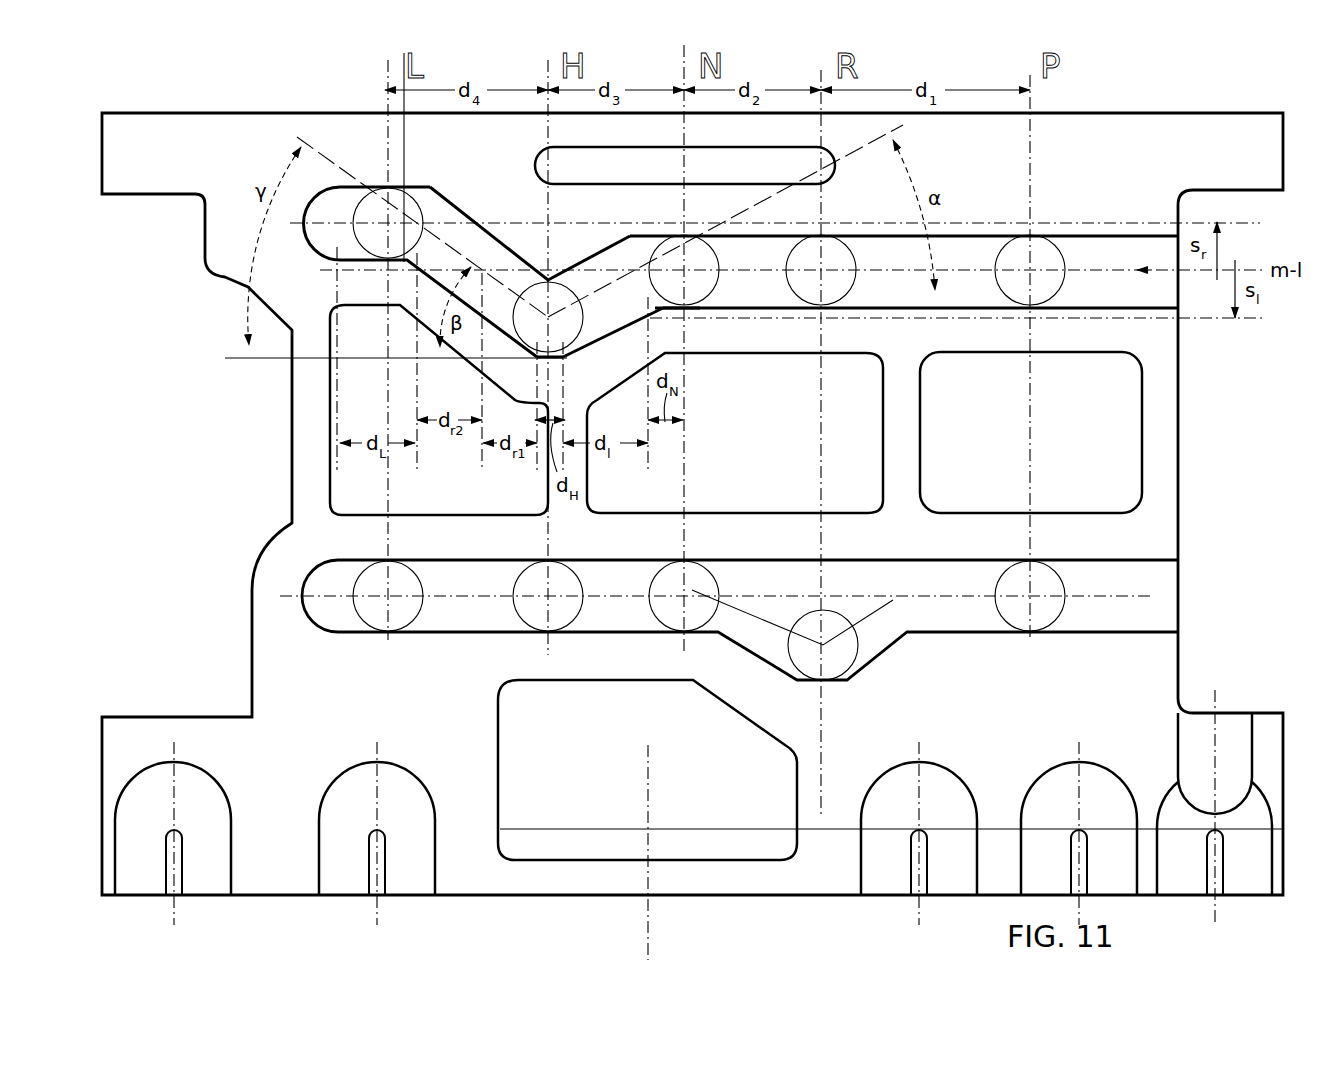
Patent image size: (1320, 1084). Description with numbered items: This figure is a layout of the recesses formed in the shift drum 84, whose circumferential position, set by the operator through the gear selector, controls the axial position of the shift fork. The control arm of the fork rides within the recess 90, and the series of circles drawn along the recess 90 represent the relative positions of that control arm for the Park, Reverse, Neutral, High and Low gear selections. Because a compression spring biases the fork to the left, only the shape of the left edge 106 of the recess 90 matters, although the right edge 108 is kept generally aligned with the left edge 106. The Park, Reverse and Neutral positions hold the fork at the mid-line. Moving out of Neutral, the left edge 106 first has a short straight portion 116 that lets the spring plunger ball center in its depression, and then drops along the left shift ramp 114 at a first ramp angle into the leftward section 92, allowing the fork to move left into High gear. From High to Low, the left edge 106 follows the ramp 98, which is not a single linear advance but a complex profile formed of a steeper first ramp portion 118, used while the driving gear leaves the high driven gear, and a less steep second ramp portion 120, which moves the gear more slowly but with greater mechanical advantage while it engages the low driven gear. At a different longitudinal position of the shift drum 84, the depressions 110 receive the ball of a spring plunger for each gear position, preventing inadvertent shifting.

The shift drum 84 is at (1082, 137).
The recess 90 is at (960, 250).
The leftward section 92 is at (583, 287).
The ramp 98 is at (423, 294).
The left edge 106 is at (947, 308).
The right edge 108 is at (1060, 233).
The depressions 110 is at (1065, 795).
The left shift ramp 114 is at (610, 337).
The short straight portion 116 is at (663, 310).
The first ramp portion 118 is at (500, 340).
The second ramp portion 120 is at (430, 283).